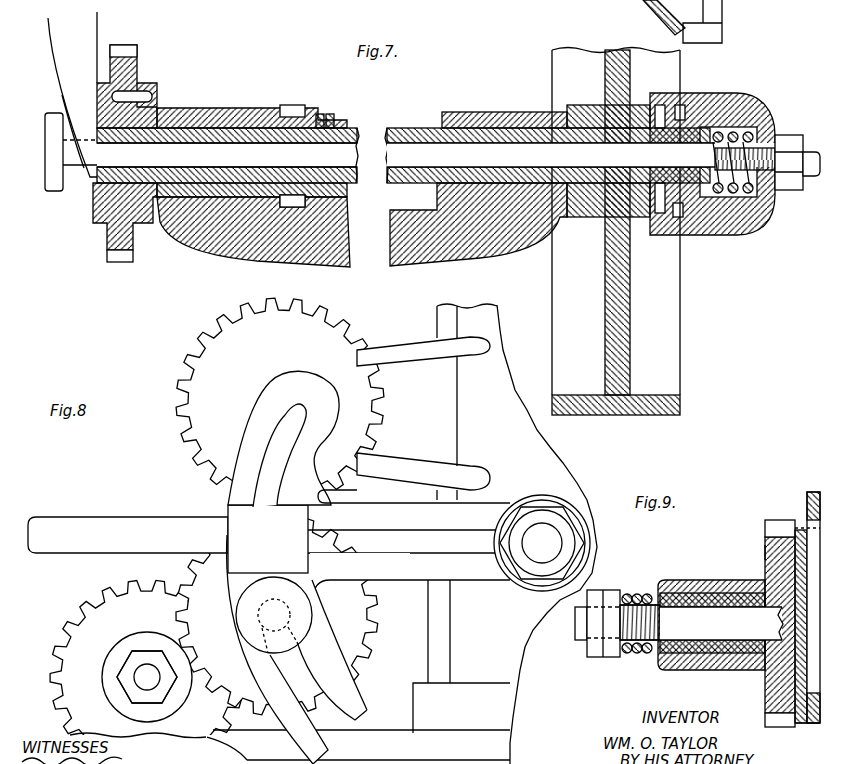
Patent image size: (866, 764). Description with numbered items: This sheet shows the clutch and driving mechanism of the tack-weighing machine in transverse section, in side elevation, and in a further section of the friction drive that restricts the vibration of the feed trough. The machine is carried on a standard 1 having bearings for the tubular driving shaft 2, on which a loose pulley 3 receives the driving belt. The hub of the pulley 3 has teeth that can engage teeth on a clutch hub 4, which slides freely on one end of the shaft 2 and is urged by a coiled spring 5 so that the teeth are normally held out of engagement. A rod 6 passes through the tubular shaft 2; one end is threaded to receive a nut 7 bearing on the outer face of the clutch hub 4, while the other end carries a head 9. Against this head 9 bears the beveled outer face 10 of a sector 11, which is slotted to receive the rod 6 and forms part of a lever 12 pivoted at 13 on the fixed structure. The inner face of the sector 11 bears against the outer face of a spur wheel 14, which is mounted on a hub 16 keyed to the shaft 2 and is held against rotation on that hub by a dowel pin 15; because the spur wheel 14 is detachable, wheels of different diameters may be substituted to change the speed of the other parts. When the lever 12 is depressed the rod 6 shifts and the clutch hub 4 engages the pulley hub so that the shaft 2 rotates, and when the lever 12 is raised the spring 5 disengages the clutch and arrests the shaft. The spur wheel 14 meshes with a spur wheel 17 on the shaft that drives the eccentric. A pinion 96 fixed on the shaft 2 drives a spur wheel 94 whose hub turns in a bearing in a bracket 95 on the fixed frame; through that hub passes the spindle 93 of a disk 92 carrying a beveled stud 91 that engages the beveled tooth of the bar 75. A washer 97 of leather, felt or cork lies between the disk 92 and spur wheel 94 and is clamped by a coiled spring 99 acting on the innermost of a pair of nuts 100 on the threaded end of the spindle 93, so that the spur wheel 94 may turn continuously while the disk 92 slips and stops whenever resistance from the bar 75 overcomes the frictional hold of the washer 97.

In FIG. 8, the standard 1 is at (333, 534).
In FIG. 7, the driving shaft 2 is at (415, 129).
In FIG. 7, the loose pulley 3 is at (640, 418).
In FIG. 7, the clutch hub 4 is at (700, 93).
In FIG. 7, the coiled spring 5 is at (742, 130).
In FIG. 7, the rod 6 is at (450, 156).
In FIG. 8, the rod 6 is at (277, 614).
In FIG. 7, the nut 7 is at (795, 143).
In FIG. 7, the head 9 is at (57, 192).
In FIG. 7, the beveled outer face 10 is at (60, 98).
In FIG. 8, the beveled outer face 10 is at (284, 649).
In FIG. 7, the sector 11 is at (72, 97).
In FIG. 8, the sector 11 is at (318, 636).
In FIG. 8, the lever 12 is at (264, 539).
In FIG. 8, the pivot 13 is at (542, 543).
In FIG. 7, the spur wheel 14 is at (123, 45).
In FIG. 8, the spur wheel 14 is at (277, 615).
In FIG. 7, the dowel pin 15 is at (155, 97).
In FIG. 7, the hub 16 is at (146, 83).
In FIG. 8, the spur wheel 17 is at (280, 402).
In FIG. 9, the bar 75 is at (813, 492).
In FIG. 9, the stud 91 is at (805, 524).
In FIG. 9, the disk 92 is at (805, 722).
In FIG. 8, the spindle 93 is at (147, 677).
In FIG. 9, the spindle 93 is at (721, 623).
In FIG. 8, the spur wheel 94 is at (147, 672).
In FIG. 9, the spur wheel 94 is at (770, 523).
In FIG. 7, the bracket 95 is at (238, 109).
In FIG. 9, the bracket 95 is at (710, 580).
In FIG. 7, the pinion 96 is at (292, 105).
In FIG. 9, the washer 97 is at (765, 555).
In FIG. 9, the coiled spring 99 is at (645, 594).
In FIG. 8, the nuts 100 is at (127, 683).
In FIG. 9, the nuts 100 is at (598, 614).